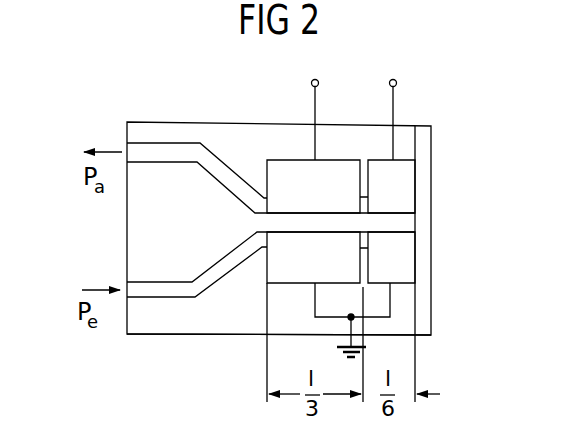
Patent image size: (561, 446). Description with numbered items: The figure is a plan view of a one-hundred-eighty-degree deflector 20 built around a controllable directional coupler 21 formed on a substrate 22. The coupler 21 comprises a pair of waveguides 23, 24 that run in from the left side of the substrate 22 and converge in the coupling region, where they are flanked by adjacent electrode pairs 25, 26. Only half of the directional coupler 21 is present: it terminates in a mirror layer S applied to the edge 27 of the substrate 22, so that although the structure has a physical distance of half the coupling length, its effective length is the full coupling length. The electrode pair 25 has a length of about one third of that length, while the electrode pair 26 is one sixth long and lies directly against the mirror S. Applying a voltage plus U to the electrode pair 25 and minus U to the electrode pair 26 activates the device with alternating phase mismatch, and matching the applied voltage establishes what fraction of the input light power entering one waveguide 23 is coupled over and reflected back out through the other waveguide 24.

The 180°-deflector 20 is at (124, 113).
The controllable directional coupler 21 is at (270, 157).
The substrate 22 is at (193, 334).
The waveguide 23 is at (168, 282).
The waveguide 24 is at (179, 162).
The electrode pair 25 is at (336, 158).
The electrode pair 26 is at (404, 158).
The edge 27 is at (428, 281).